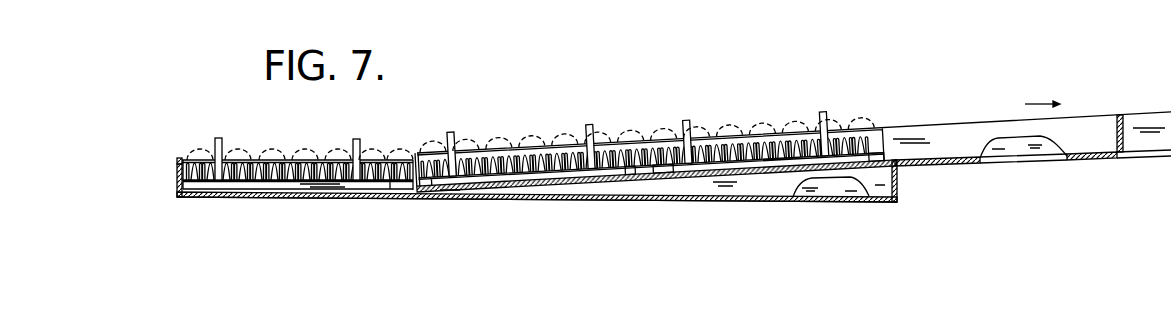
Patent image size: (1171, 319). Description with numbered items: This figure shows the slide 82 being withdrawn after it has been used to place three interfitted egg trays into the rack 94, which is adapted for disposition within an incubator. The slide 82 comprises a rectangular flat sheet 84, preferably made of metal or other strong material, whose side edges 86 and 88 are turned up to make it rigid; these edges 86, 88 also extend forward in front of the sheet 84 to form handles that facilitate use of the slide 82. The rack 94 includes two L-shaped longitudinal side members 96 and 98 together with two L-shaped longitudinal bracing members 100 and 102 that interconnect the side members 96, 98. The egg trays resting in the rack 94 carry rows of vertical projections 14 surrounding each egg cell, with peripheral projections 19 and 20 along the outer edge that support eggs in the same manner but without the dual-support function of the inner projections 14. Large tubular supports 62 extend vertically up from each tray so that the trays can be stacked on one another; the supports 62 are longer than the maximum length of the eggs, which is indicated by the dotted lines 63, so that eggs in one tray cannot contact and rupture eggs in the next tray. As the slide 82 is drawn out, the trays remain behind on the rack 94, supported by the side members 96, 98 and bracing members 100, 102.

The projections 14 is at (232, 181).
The projection 19 is at (181, 163).
The projection 20 is at (271, 181).
The tubular supports 62 is at (215, 140).
The dotted lines 63 is at (303, 149).
The slide 82 is at (689, 182).
The rectangular flat sheet 84 is at (761, 177).
The side edge 86 is at (952, 132).
The side edge 88 is at (1018, 148).
The rack 94 is at (358, 196).
The longitudinal side member 96 is at (881, 180).
The longitudinal side member 98 is at (831, 186).
The bracing member 100 is at (178, 183).
The bracing member 102 is at (897, 187).